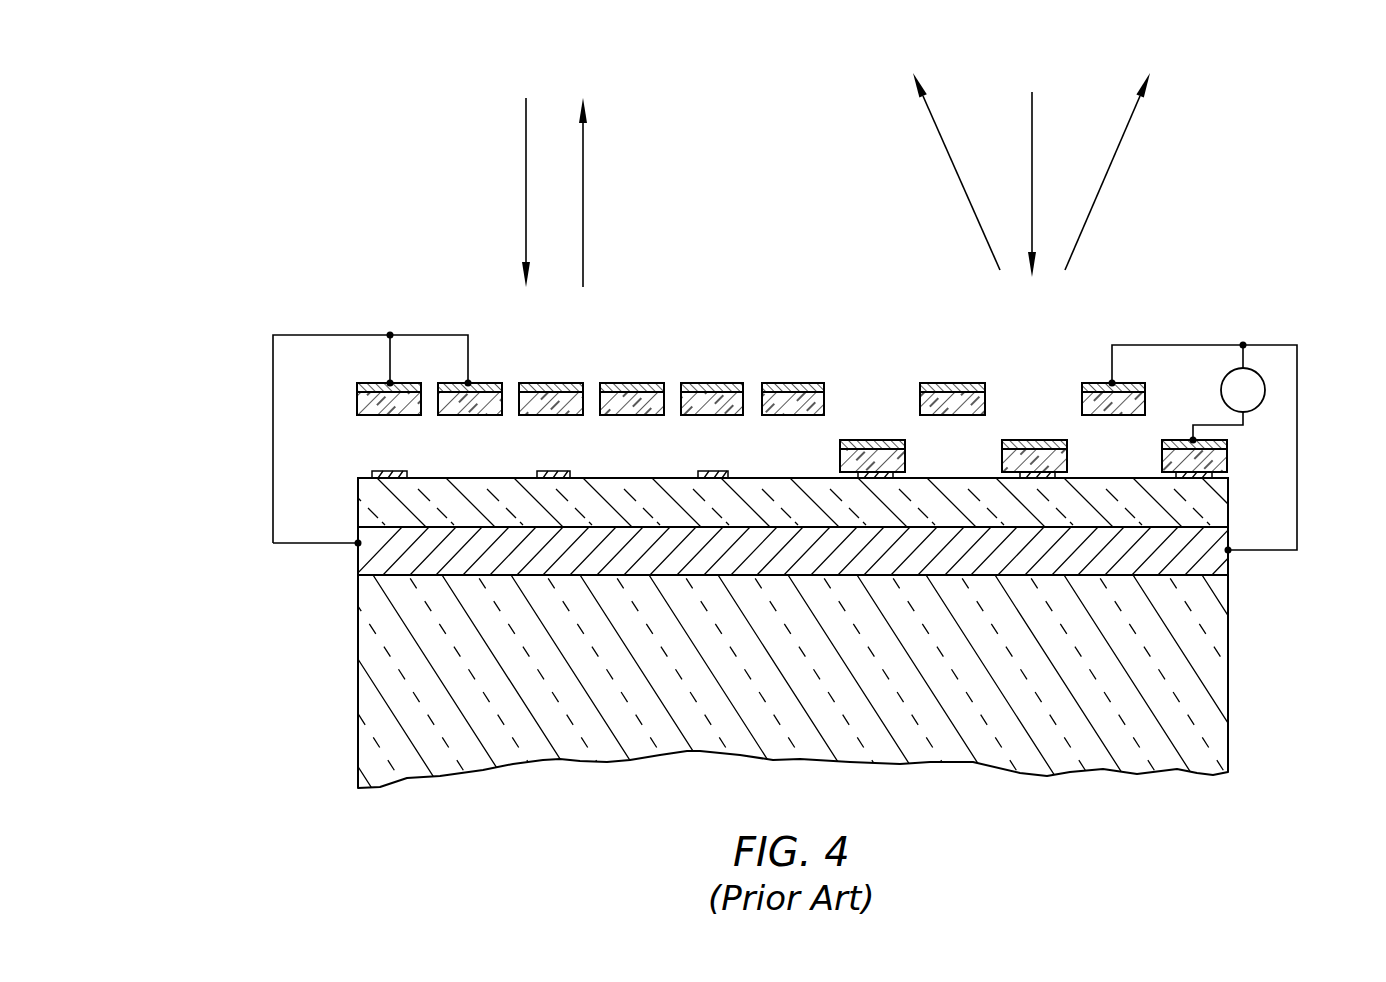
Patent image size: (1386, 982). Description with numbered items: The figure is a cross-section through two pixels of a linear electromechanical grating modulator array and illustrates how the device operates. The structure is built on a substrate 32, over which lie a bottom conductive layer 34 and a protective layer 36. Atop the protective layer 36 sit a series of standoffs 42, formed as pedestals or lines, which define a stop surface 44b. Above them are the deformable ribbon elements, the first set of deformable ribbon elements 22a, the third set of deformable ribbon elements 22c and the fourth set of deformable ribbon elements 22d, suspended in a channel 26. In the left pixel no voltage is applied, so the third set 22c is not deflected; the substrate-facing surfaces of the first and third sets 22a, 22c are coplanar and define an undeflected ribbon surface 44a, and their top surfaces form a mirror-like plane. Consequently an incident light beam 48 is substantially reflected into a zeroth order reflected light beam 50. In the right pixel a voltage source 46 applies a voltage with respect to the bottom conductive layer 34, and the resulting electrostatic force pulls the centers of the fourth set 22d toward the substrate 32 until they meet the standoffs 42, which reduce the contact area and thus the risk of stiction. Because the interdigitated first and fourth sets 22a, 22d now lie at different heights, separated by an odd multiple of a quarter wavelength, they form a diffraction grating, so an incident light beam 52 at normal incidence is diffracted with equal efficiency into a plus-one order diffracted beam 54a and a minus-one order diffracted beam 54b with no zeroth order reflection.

The first set of deformable ribbon elements 22a is at (641, 390).
The third set of deformable ribbon elements 22c is at (404, 390).
The fourth set of deformable ribbon elements 22d is at (870, 455).
The channel 26 is at (797, 465).
The substrate 32 is at (372, 636).
The bottom conductive layer 34 is at (372, 562).
The protective layer 36 is at (372, 505).
The standoffs 42 is at (378, 472).
The undeflected ribbon surface 44a is at (350, 416).
The stop surface 44b is at (1232, 471).
The voltage source 46 is at (1258, 373).
The incident light beam 48 is at (526, 172).
The 0th order reflected light beam 50 is at (583, 130).
The incident light beam 52 is at (1030, 118).
The +1 order diffracted beam 54a is at (1150, 90).
The −1 order diffracted beam 54b is at (945, 153).